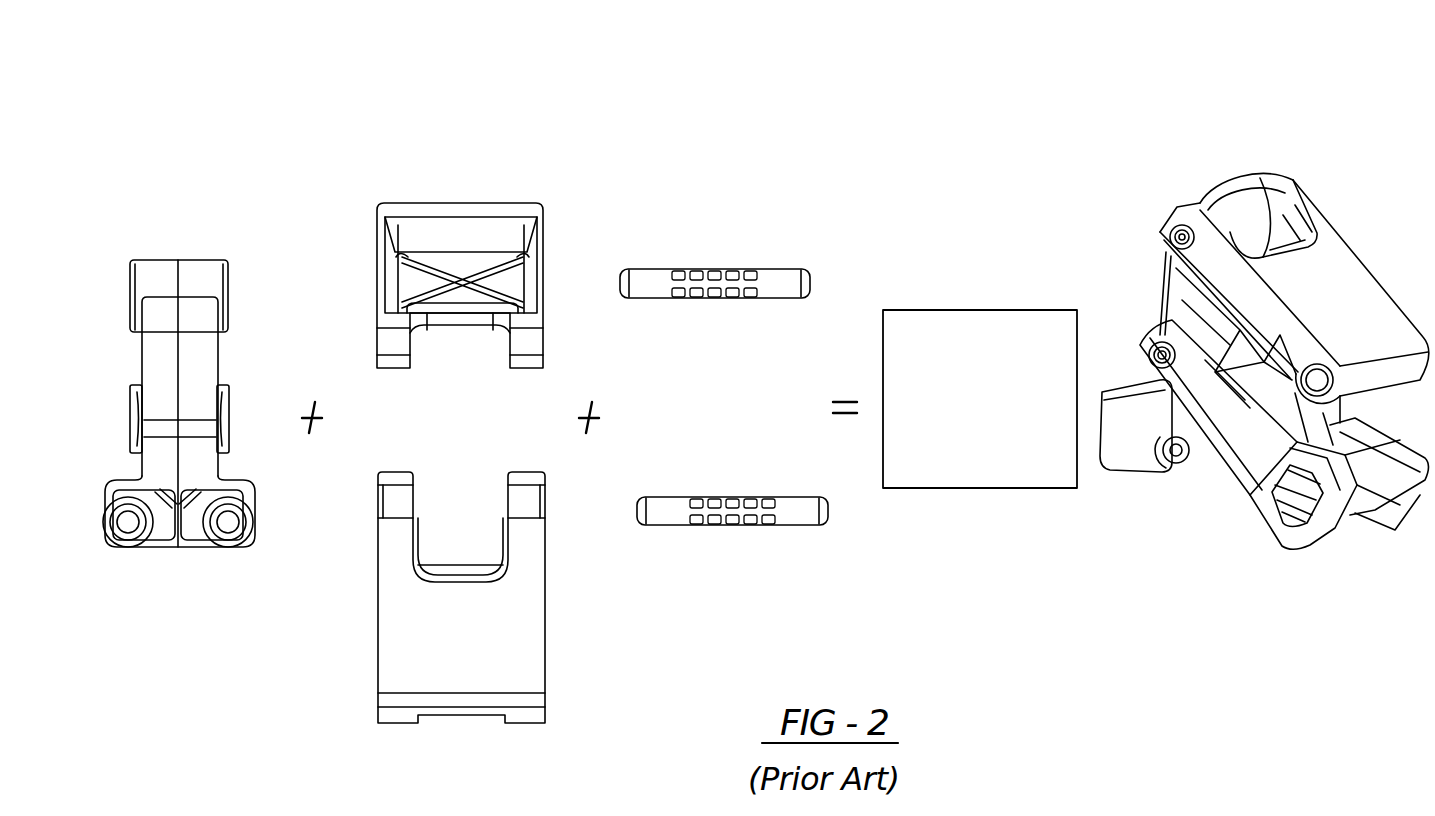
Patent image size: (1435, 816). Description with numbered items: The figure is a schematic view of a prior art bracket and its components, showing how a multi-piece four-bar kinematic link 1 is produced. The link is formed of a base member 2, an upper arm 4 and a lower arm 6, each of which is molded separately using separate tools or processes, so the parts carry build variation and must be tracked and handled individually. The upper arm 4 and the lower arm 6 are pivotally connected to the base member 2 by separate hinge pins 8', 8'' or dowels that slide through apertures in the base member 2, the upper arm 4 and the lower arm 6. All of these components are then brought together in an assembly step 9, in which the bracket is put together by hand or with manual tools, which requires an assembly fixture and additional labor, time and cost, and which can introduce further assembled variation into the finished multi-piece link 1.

The multi-piece 4-bar kinematic link 1 is at (1362, 197).
The base member 2 is at (163, 262).
The upper arm 4 is at (483, 225).
The lower arm 6 is at (410, 653).
The hinge pin 8' is at (715, 236).
The hinge pin 8'' is at (732, 555).
The assembly step 9 is at (998, 310).